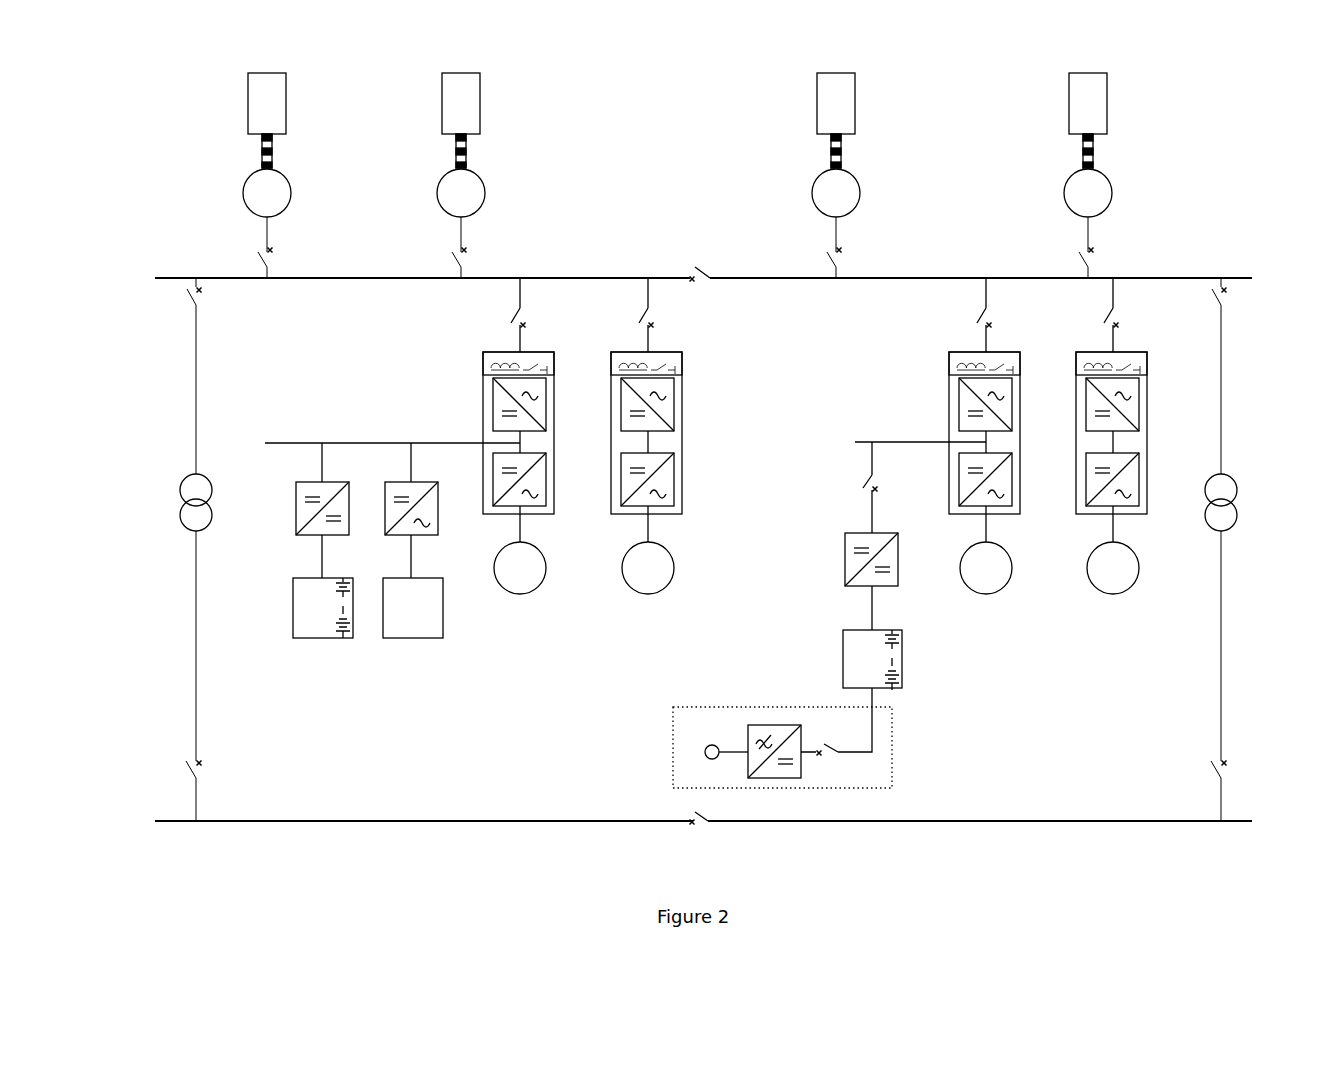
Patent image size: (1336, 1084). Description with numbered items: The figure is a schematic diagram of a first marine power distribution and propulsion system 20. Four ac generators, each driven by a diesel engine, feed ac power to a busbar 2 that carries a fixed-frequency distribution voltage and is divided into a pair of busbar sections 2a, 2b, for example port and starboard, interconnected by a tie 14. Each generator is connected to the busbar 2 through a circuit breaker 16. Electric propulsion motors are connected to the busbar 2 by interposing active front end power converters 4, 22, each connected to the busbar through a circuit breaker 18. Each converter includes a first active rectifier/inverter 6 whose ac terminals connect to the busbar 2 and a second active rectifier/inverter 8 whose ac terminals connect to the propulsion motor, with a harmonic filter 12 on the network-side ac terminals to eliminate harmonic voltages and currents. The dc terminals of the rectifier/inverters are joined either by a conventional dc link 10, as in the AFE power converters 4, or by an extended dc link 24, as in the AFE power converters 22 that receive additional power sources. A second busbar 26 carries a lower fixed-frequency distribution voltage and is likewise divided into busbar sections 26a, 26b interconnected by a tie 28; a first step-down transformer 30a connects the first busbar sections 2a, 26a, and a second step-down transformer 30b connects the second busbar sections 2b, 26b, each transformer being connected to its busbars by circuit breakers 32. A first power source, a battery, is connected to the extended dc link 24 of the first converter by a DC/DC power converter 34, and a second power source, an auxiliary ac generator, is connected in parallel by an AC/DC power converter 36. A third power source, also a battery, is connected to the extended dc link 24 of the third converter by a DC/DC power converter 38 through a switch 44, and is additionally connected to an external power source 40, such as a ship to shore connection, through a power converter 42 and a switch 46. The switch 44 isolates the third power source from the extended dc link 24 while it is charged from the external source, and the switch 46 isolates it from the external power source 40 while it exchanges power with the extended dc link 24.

The busbar 2 is at (703, 210).
The first busbar section 2a is at (665, 278).
The second busbar section 2b is at (948, 277).
The active front end power converter 4 is at (904, 438).
The first active rectifier/inverter 6 is at (958, 405).
The second active rectifier/inverter 8 is at (1012, 505).
The dc link 10 is at (1117, 443).
The harmonic filter 12 is at (706, 437).
The tie 14 is at (700, 258).
The circuit breaker 16 is at (445, 253).
The circuit breaker 18 is at (657, 320).
The marine power distribution and propulsion system 20 is at (1177, 177).
The active front end power converter 22 is at (568, 512).
The extended dc link 24 is at (378, 428).
The second busbar 26 is at (703, 817).
The first busbar section of second busbar 26a is at (505, 821).
The second busbar section of second busbar 26b is at (1047, 822).
The tie 28 is at (680, 836).
The first step-down transformer 30a is at (160, 537).
The second step-down transformer 30b is at (1245, 537).
The circuit breaker 32 is at (182, 303).
The DC/DC power converter 34 is at (297, 506).
The AC/DC power converter 36 is at (438, 506).
The DC/DC power converter 38 is at (898, 572).
The external power source 40 is at (705, 745).
The power converter 42 is at (775, 725).
The switch 44 is at (855, 476).
The switch 46 is at (845, 757).